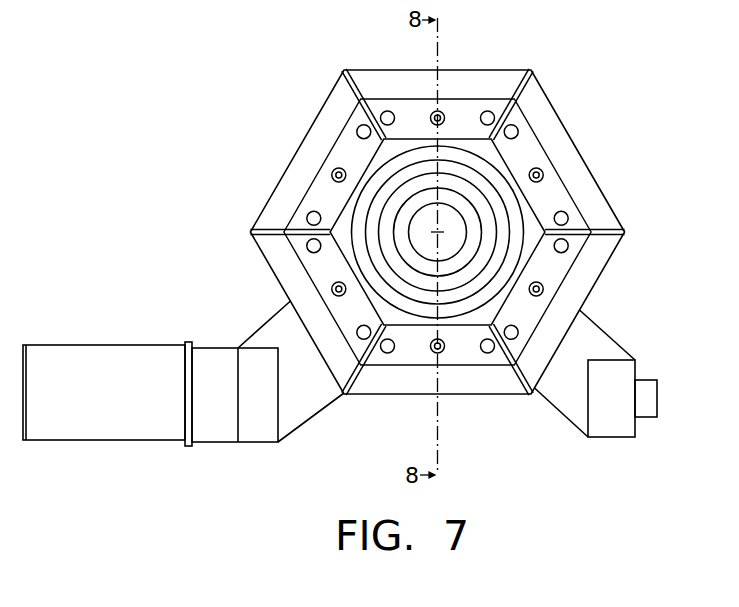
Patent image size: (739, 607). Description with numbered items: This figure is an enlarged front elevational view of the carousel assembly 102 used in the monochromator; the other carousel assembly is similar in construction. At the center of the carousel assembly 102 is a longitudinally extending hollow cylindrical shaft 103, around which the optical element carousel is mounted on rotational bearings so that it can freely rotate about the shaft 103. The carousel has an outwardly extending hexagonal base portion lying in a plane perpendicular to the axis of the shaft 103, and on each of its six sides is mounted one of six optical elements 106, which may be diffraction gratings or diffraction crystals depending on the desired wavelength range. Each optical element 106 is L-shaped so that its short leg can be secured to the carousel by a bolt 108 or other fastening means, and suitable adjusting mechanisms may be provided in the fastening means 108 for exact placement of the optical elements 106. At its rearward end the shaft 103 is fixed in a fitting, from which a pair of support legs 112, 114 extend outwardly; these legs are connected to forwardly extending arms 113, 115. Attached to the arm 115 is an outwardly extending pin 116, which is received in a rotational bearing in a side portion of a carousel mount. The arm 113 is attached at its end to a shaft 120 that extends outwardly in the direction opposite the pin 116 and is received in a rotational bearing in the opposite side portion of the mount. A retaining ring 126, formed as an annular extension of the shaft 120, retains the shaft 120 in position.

The carousel assembly 102 is at (647, 222).
The hollow cylindrical shaft 103 is at (470, 212).
The optical elements 106 is at (313, 133).
The bolt 108 is at (331, 174).
The support leg 112 is at (303, 405).
The arm 113 is at (258, 433).
The support leg 114 is at (560, 397).
The arm 115 is at (610, 438).
The pin 116 is at (657, 407).
The shaft 120 is at (97, 431).
The retaining ring 126 is at (187, 444).